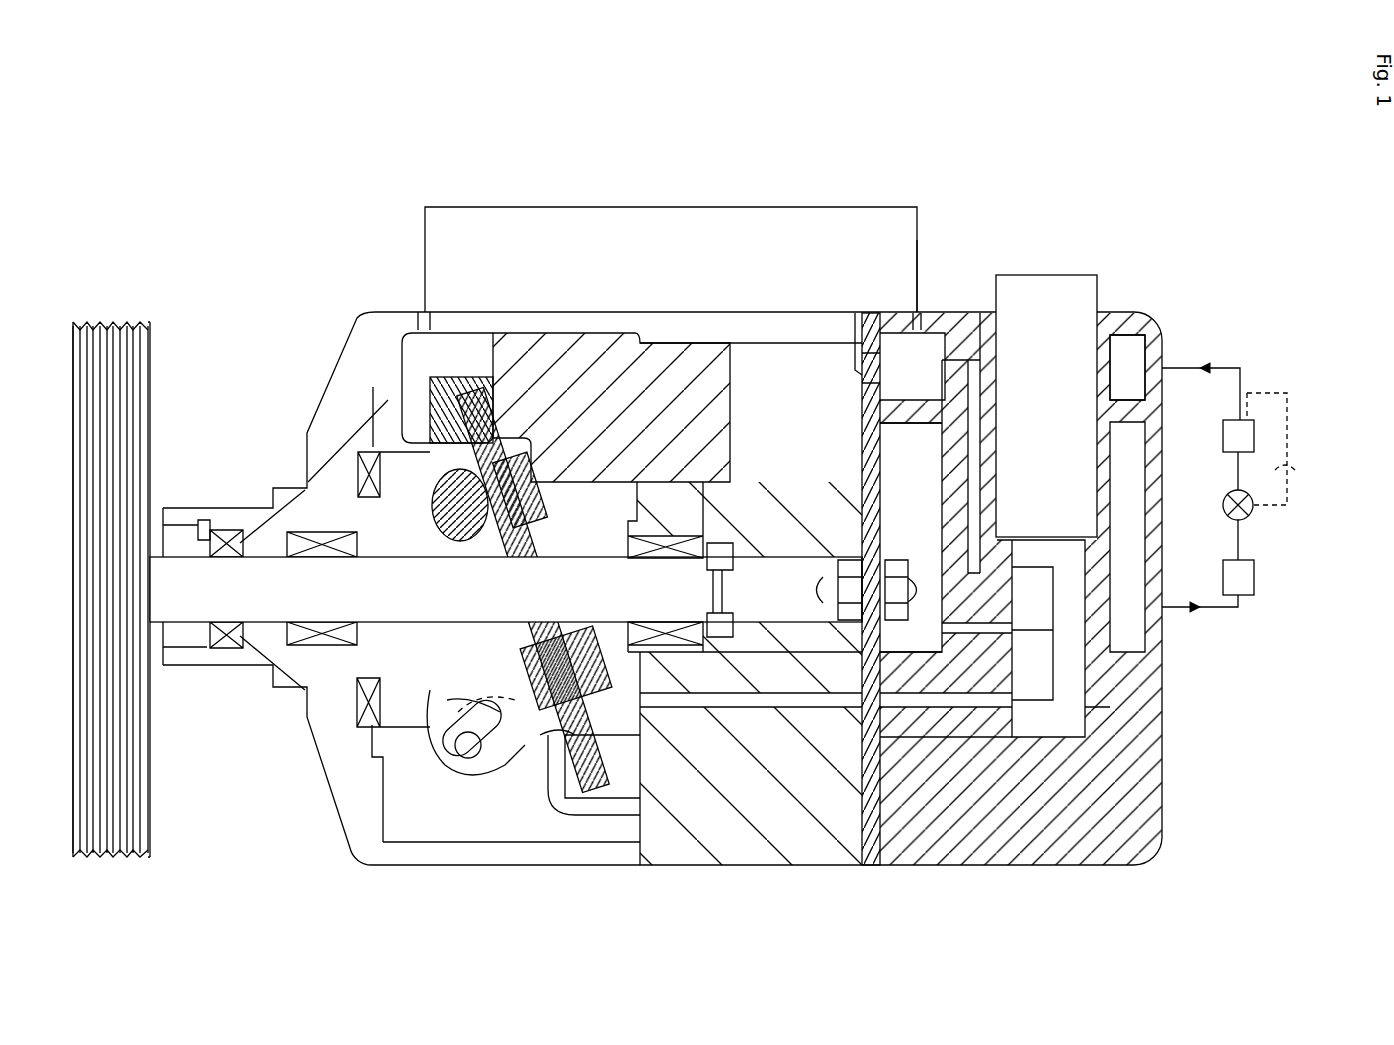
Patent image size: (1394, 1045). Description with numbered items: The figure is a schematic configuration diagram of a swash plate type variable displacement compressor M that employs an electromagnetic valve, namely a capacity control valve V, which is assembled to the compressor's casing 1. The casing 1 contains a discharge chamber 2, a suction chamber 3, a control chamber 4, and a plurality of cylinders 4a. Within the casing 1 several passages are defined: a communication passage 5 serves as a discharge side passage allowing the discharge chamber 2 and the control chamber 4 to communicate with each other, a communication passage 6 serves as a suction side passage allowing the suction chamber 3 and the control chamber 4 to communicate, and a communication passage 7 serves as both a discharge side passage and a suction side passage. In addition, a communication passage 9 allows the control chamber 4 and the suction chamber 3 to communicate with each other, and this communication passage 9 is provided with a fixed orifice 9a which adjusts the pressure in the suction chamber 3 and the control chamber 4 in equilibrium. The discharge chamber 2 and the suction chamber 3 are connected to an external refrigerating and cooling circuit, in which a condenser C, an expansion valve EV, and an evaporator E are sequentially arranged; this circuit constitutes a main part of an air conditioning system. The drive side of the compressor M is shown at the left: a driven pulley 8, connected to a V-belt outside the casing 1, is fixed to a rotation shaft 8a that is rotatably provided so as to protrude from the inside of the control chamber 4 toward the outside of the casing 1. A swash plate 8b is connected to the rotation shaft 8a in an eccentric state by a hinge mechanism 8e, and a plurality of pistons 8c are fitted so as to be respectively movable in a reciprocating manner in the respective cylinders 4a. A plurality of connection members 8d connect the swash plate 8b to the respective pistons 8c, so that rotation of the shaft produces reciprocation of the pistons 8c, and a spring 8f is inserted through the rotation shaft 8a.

The casing 1 is at (703, 288).
The discharge chamber 2 is at (1125, 510).
The suction chamber 3 is at (1118, 375).
The control chamber 4 is at (493, 787).
The cylinders 4a is at (768, 352).
The communication passage 5 is at (943, 627).
The communication passage 6 is at (958, 360).
The communication passage 7 is at (977, 708).
The driven pulley 8 is at (150, 322).
The rotation shaft 8a is at (325, 580).
The swash plate 8b is at (456, 390).
The pistons 8c is at (660, 370).
The connection members 8d is at (397, 400).
The hinge mechanism 8e is at (438, 753).
The spring 8f is at (357, 663).
The communication passage 9 is at (785, 207).
The fixed orifice 9a is at (920, 262).
The variable displacement compressor M is at (347, 140).
The capacity control valve V is at (1066, 252).
The evaporator E is at (1257, 405).
The expansion valve EV is at (1255, 505).
The condenser C is at (1255, 585).